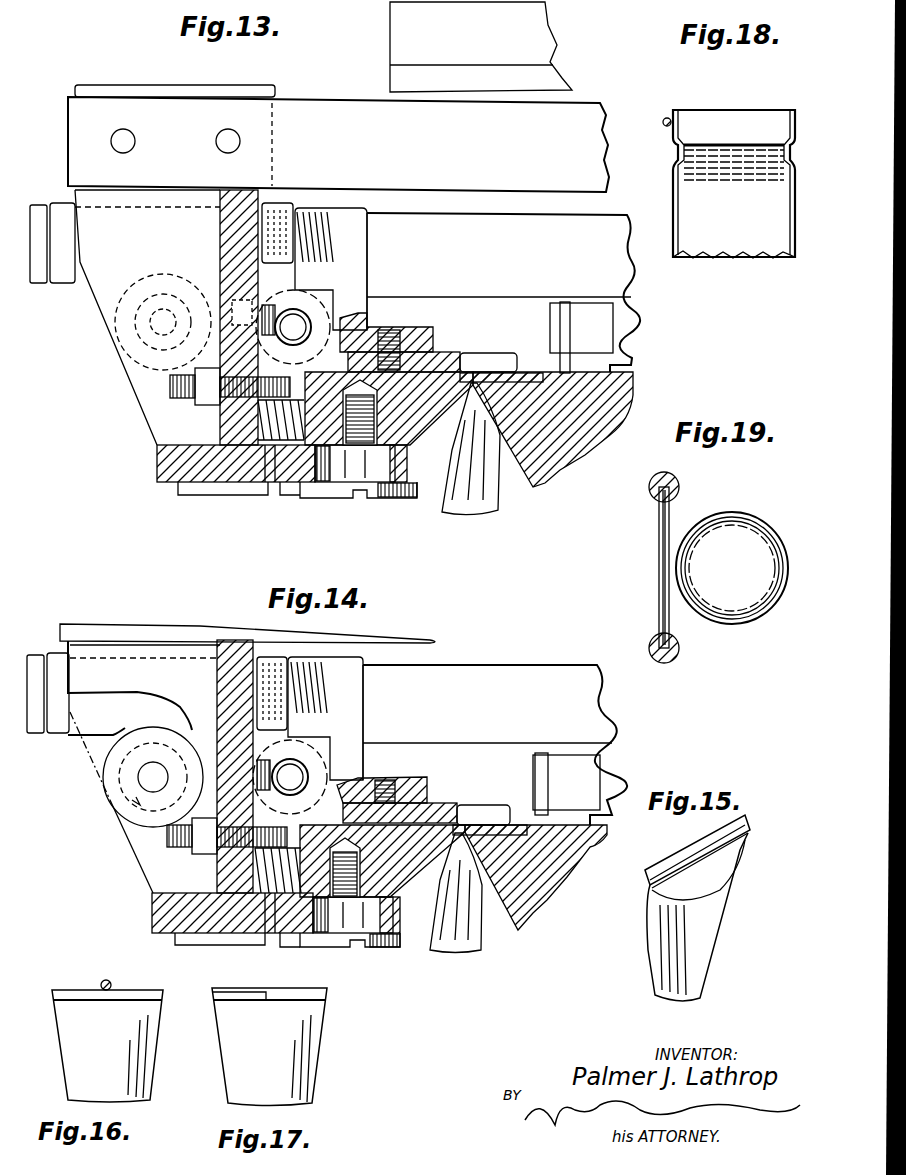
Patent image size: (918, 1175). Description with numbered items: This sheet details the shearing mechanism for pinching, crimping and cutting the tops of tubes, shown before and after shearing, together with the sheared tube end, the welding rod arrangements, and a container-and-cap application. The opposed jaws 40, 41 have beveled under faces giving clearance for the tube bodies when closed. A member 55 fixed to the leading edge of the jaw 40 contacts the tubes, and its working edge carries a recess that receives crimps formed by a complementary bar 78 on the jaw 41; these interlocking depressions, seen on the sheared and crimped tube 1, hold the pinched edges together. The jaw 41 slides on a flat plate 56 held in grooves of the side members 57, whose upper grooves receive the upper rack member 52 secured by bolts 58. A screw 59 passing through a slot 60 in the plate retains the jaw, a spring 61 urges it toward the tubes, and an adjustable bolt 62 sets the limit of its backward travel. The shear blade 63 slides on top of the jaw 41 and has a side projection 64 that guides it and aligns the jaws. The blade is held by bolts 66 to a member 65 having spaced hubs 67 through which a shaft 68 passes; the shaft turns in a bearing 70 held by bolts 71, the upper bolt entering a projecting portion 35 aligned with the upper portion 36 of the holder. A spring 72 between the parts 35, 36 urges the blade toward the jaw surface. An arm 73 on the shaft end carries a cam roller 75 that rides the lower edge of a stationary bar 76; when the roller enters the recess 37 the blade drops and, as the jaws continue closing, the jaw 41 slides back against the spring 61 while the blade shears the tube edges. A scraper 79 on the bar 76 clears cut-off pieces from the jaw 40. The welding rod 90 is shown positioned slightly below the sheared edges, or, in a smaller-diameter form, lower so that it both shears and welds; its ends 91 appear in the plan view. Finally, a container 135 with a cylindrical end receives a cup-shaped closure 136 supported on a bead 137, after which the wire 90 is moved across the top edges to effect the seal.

In FIG. 15, the slug / tubular member 1 is at (648, 957).
In FIG. 16, the slug / tubular member 1 is at (62, 1060).
In FIG. 17, the slug / tubular member 1 is at (222, 1067).
In FIG. 13, the projecting portion 35 is at (285, 215).
In FIG. 14, the projecting portion 35 is at (272, 660).
In FIG. 13, the upper portion of the plate holder 36 is at (355, 207).
In FIG. 14, the upper portion of the plate holder 36 is at (350, 688).
In FIG. 14, the recess 37 is at (122, 728).
In FIG. 13, the jaw 40 is at (535, 470).
In FIG. 14, the jaw 40 is at (533, 912).
In FIG. 13, the jaw 41 is at (418, 440).
In FIG. 14, the jaw 41 is at (410, 875).
In FIG. 13, the upper rack member 52 is at (338, 138).
In FIG. 13, the member 55 is at (530, 373).
In FIG. 14, the member 55 is at (520, 825).
In FIG. 13, the flat plate 56 is at (175, 484).
In FIG. 14, the flat plate 56 is at (152, 912).
In FIG. 13, the side members 57 is at (130, 388).
In FIG. 14, the side members 57 is at (135, 853).
In FIG. 13, the bolts 58 is at (216, 141).
In FIG. 13, the screw 59 is at (385, 492).
In FIG. 14, the screw 59 is at (372, 947).
In FIG. 13, the slot 60 is at (316, 484).
In FIG. 14, the slot 60 is at (400, 928).
In FIG. 13, the spring 61 is at (272, 484).
In FIG. 14, the spring 61 is at (272, 946).
In FIG. 13, the adjustable bolt 62 is at (185, 398).
In FIG. 14, the adjustable bolt 62 is at (185, 848).
In FIG. 13, the shear blade 63 is at (437, 352).
In FIG. 14, the shear blade 63 is at (440, 805).
In FIG. 13, the projection 64 is at (495, 348).
In FIG. 14, the projection 64 is at (485, 805).
In FIG. 13, the member 65 is at (418, 327).
In FIG. 14, the member 65 is at (420, 777).
In FIG. 13, the bolts 66 is at (388, 327).
In FIG. 14, the bolts 66 is at (383, 780).
In FIG. 13, the hubs 67 is at (278, 295).
In FIG. 14, the hubs 67 is at (278, 745).
In FIG. 13, the shaft 68 is at (293, 327).
In FIG. 14, the shaft 68 is at (290, 777).
In FIG. 13, the bearing 70 is at (333, 296).
In FIG. 14, the bearing 70 is at (330, 762).
In FIG. 13, the bolts 71 is at (220, 240).
In FIG. 13, the spring 72 is at (320, 210).
In FIG. 14, the spring 72 is at (305, 665).
In FIG. 14, the arm 73 is at (132, 800).
In FIG. 14, the cam roller 75 is at (105, 770).
In FIG. 14, the bar 76 is at (38, 735).
In FIG. 13, the bar 78 is at (475, 372).
In FIG. 14, the bar 78 is at (462, 828).
In FIG. 13, the scraper 79 is at (570, 333).
In FIG. 14, the scraper 79 is at (552, 781).
In FIG. 18, the welding rod 90 is at (654, 113).
In FIG. 19, the welding rod 90 is at (659, 555).
In FIG. 16, the welding rod 90 is at (96, 977).
In FIG. 17, the welding rod 90 is at (245, 1013).
In FIG. 19, the wire end 91 is at (649, 648).
In FIG. 18, the container or tube 135 is at (684, 210).
In FIG. 19, the container or tube 135 is at (735, 512).
In FIG. 18, the cup-shaped closure 136 is at (695, 142).
In FIG. 19, the cup-shaped closure 136 is at (775, 602).
In FIG. 18, the bead 137 is at (680, 153).